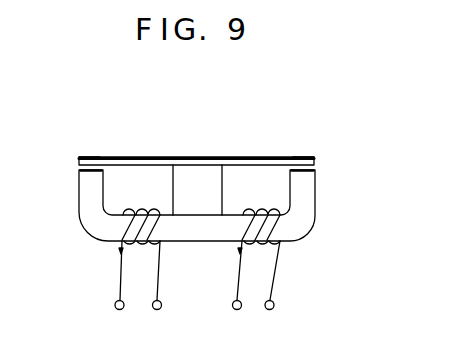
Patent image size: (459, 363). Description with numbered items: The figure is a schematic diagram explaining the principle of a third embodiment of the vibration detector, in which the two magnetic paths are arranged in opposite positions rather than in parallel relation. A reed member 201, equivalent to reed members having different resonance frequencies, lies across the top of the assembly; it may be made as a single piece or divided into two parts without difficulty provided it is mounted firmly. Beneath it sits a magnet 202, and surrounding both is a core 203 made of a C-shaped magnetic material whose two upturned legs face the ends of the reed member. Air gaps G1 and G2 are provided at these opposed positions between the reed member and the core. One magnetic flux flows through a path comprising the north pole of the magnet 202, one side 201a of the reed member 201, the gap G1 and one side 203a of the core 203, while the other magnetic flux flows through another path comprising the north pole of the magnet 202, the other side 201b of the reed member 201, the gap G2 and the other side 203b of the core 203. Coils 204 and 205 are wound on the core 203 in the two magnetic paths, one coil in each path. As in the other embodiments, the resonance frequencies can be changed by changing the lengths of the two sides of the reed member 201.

The reed member 201 is at (243, 157).
The one side of the reed member 201a is at (305, 157).
The other side of the reed member 201b is at (90, 157).
The magnet 202 is at (213, 184).
The core 203 is at (300, 227).
The one side of the core 203a is at (308, 192).
The other side of the core 203b is at (88, 189).
The coil 204 is at (278, 268).
The coil 205 is at (162, 258).
The air gap G1 is at (315, 168).
The air gap G2 is at (80, 163).